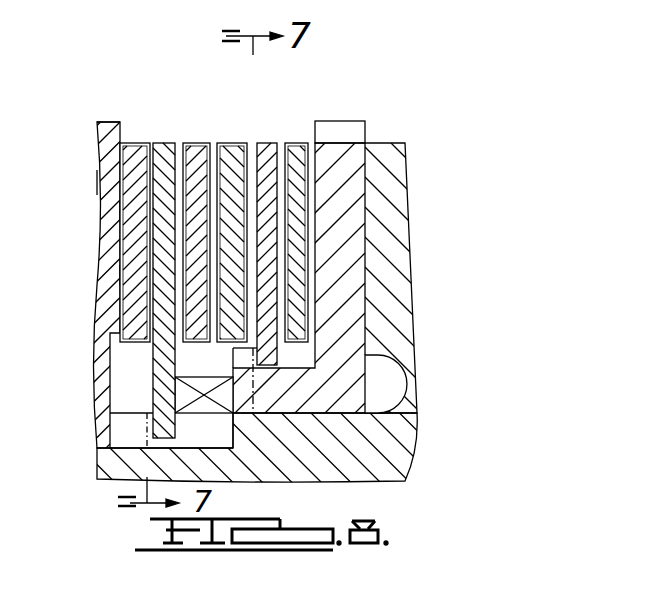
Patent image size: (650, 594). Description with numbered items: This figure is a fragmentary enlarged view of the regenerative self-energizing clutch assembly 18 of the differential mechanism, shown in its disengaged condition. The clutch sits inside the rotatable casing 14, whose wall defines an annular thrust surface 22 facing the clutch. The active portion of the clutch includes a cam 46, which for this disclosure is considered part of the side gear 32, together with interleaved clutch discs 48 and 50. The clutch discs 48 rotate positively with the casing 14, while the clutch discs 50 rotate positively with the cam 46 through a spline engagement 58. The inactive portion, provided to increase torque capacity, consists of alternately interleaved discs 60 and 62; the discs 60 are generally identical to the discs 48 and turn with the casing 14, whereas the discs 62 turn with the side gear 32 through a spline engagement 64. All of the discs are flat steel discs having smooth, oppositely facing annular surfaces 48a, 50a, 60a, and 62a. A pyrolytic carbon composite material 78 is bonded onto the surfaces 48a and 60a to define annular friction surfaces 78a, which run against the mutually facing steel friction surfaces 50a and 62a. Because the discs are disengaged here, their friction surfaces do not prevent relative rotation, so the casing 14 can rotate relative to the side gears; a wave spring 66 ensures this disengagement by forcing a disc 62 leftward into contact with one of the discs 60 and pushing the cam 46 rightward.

The casing 14 is at (100, 245).
The regenerative self-energizing clutch assembly 18 is at (98, 182).
The annular thrust surface 22 is at (118, 210).
The side gear 32 is at (392, 438).
The cam 46 is at (367, 147).
The clutch discs 48 is at (232, 142).
The annular surfaces 48a is at (253, 141).
The clutch discs 50 is at (268, 280).
The annular surfaces 50a is at (283, 142).
The spline engagement 58 is at (257, 353).
The discs 60 is at (193, 141).
The annular surfaces 60a is at (192, 128).
The discs 62 is at (150, 352).
The annular surfaces 62a is at (150, 141).
The spline engagement 64 is at (110, 420).
The wave spring 66 is at (214, 418).
The pyrolytic carbon composite material 78 is at (128, 122).
The annular friction surfaces 78a is at (152, 277).